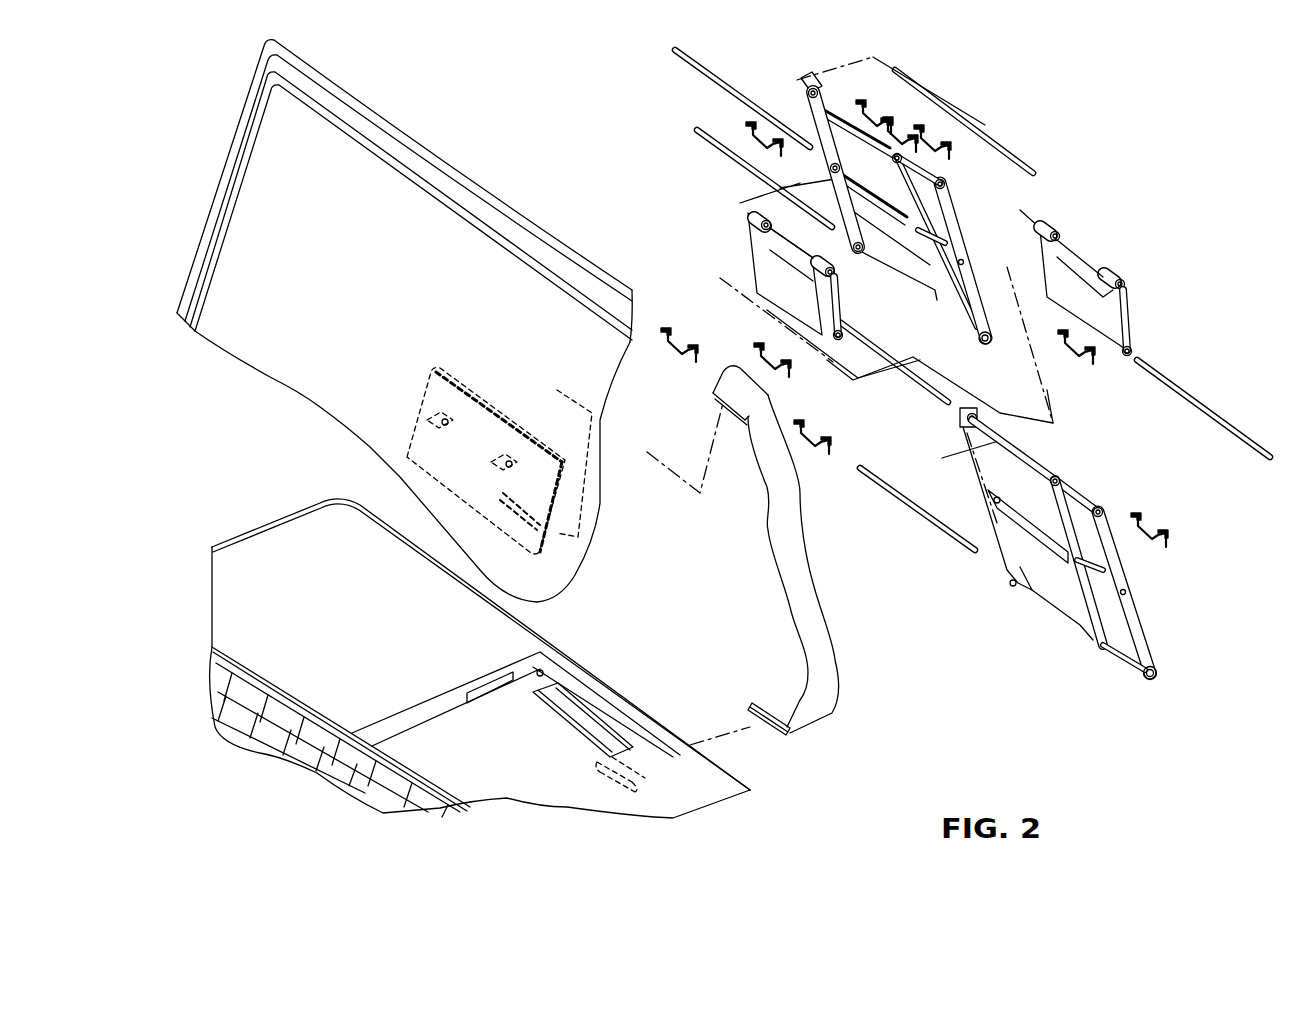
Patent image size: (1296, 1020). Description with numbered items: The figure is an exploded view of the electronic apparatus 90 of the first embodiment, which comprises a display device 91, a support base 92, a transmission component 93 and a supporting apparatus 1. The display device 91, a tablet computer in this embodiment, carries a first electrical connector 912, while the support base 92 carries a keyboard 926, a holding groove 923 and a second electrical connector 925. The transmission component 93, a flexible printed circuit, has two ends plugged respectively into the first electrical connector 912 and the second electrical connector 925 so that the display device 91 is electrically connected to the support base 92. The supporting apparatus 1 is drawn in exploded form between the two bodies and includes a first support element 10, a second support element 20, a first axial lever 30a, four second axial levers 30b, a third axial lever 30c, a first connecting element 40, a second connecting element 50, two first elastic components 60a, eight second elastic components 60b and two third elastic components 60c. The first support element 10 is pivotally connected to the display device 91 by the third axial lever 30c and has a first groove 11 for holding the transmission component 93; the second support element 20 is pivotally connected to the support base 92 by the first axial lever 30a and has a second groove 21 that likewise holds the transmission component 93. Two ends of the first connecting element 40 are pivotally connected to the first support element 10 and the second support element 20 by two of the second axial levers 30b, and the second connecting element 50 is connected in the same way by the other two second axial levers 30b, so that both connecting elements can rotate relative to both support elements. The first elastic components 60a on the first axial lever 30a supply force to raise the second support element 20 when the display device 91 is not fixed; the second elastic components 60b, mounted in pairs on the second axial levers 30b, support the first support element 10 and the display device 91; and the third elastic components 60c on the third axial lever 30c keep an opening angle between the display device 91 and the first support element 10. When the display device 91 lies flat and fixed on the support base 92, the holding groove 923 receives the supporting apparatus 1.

The supporting apparatus 1 is at (1130, 203).
The first support element 10 is at (907, 257).
The first groove 11 is at (940, 306).
The second support element 20 is at (1058, 545).
The second groove 21 is at (1098, 644).
The first axial lever 30a is at (925, 517).
The second axial lever 30b is at (690, 60).
The third axial lever 30c is at (995, 142).
The first connecting element 40 is at (760, 253).
The second connecting element 50 is at (1125, 305).
The first elastic component 60a is at (683, 370).
The second elastic component 60b is at (748, 122).
The third elastic component 60c is at (877, 98).
The portable electronic device 90 is at (182, 382).
The display device 91 is at (205, 262).
The support base 92 is at (265, 560).
The transmission component 93 is at (800, 633).
The first electrical connector 912 is at (560, 535).
The holding groove 923 is at (405, 716).
The second electrical connector 925 is at (640, 745).
The keyboard 926 is at (236, 736).